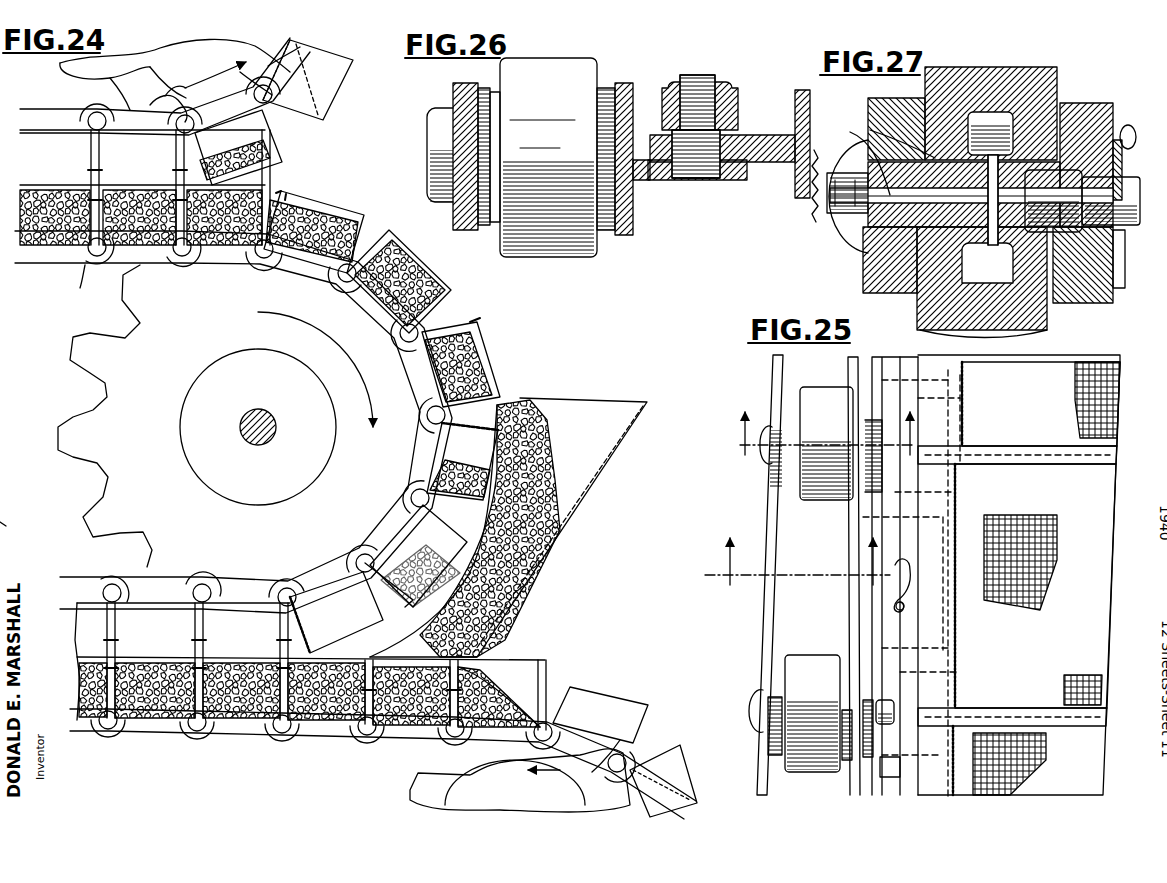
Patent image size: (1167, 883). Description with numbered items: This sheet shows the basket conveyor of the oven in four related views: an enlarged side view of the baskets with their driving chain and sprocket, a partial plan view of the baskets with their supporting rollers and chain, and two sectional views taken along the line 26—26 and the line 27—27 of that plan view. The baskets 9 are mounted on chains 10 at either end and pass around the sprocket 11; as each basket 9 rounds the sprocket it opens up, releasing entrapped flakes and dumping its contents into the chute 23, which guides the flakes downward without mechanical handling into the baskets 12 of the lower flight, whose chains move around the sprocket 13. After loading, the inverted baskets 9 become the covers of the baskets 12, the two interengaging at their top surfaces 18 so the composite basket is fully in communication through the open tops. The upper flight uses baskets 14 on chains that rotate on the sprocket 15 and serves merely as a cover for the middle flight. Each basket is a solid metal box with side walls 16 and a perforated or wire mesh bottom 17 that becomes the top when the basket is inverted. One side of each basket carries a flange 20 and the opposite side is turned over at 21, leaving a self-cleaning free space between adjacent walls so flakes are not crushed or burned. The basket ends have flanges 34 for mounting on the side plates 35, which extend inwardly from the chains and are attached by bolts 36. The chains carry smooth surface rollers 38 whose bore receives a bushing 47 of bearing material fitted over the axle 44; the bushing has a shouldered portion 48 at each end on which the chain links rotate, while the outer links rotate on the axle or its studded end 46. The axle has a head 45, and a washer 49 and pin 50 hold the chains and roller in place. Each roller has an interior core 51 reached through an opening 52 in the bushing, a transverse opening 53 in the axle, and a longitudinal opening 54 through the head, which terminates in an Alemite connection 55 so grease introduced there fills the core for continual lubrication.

In FIG. 24, the baskets 9 is at (314, 198).
In FIG. 24, the chains 10 is at (66, 102).
In FIG. 26, the chains 10 is at (633, 228).
In FIG. 27, the chains 10 is at (862, 272).
In FIG. 25, the chains 10 is at (782, 554).
In FIG. 24, the sprocket 11 is at (96, 408).
In FIG. 24, the baskets 12 is at (590, 680).
In FIG. 24, the sprocket 13 is at (418, 786).
In FIG. 24, the baskets 14 is at (172, 160).
In FIG. 24, the sprocket 15 is at (126, 65).
In FIG. 24, the side walls 16 is at (266, 148).
In FIG. 26, the side walls 16 is at (792, 104).
In FIG. 24, the basket bottom 17 is at (148, 118).
In FIG. 25, the basket bottom 17 is at (1073, 388).
In FIG. 24, the top surfaces 18 is at (156, 656).
In FIG. 24, the flange 20 is at (455, 304).
In FIG. 25, the flange 20 is at (960, 460).
In FIG. 24, the turned-over side 21 is at (458, 327).
In FIG. 25, the turned-over side 21 is at (1050, 446).
In FIG. 24, the chute 23 is at (624, 402).
In FIG. 25, the section line 26— 26 is at (796, 553).
In FIG. 25, the section line 27— 27 is at (827, 448).
In FIG. 26, the flanges 34 is at (768, 136).
In FIG. 25, the flanges 34 is at (908, 360).
In FIG. 26, the side plates 35 is at (746, 180).
In FIG. 25, the side plates 35 is at (892, 360).
In FIG. 26, the bolts 36 is at (717, 80).
In FIG. 25, the bolts 36 is at (906, 584).
In FIG. 24, the smooth surface rollers 38 is at (75, 283).
In FIG. 26, the smooth surface rollers 38 is at (578, 254).
In FIG. 27, the smooth surface rollers 38 is at (1046, 316).
In FIG. 25, the smooth surface rollers 38 is at (826, 392).
In FIG. 27, the axle 44 is at (1068, 192).
In FIG. 26, the head 45 is at (427, 164).
In FIG. 27, the head 45 is at (836, 242).
In FIG. 25, the head 45 is at (748, 704).
In FIG. 27, the studded end 46 is at (1094, 204).
In FIG. 25, the studded end 46 is at (880, 764).
In FIG. 27, the bushing 47 is at (870, 128).
In FIG. 27, the shouldered portion 48 is at (890, 276).
In FIG. 27, the washer 49 is at (1112, 274).
In FIG. 25, the washer 49 is at (878, 726).
In FIG. 27, the pin 50 is at (1130, 128).
In FIG. 25, the pin 50 is at (884, 700).
In FIG. 27, the interior core 51 is at (996, 278).
In FIG. 27, the opening in bushing 52 is at (1020, 332).
In FIG. 27, the transverse opening 53 is at (1015, 128).
In FIG. 27, the longitudinal opening 54 is at (850, 132).
In FIG. 27, the Alemite connection 55 is at (830, 214).